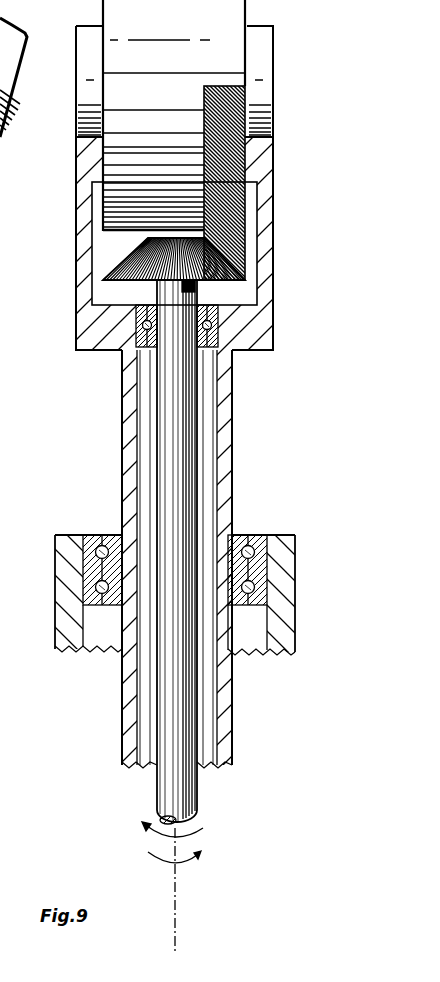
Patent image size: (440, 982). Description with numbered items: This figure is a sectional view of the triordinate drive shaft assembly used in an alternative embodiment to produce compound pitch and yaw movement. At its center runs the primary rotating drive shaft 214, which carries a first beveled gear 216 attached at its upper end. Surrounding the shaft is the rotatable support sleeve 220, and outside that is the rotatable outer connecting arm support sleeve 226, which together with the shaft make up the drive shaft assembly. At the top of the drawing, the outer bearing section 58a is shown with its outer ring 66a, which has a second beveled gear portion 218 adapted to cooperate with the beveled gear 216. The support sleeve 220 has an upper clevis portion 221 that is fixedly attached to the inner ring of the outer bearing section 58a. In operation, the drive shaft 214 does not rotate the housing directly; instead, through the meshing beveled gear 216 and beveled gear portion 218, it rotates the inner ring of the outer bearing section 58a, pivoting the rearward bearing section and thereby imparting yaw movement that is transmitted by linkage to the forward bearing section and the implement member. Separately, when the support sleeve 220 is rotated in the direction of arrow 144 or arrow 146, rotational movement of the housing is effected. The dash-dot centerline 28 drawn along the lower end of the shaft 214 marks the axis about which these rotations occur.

The outer bearing section 58a is at (255, 60).
The outer ring 66a is at (138, 173).
The upper clevis portion 221 is at (262, 160).
The second beveled gear portion 218 is at (224, 211).
The first beveled gear 216 is at (117, 260).
The rotatable support sleeve 220 is at (223, 383).
The primary rotating drive shaft 214 is at (170, 463).
The rotatable outer connecting arm support sleeve 226 is at (280, 540).
The arrow 144 is at (153, 837).
The arrow 146 is at (187, 866).
The axis of rotation 28 is at (177, 920).